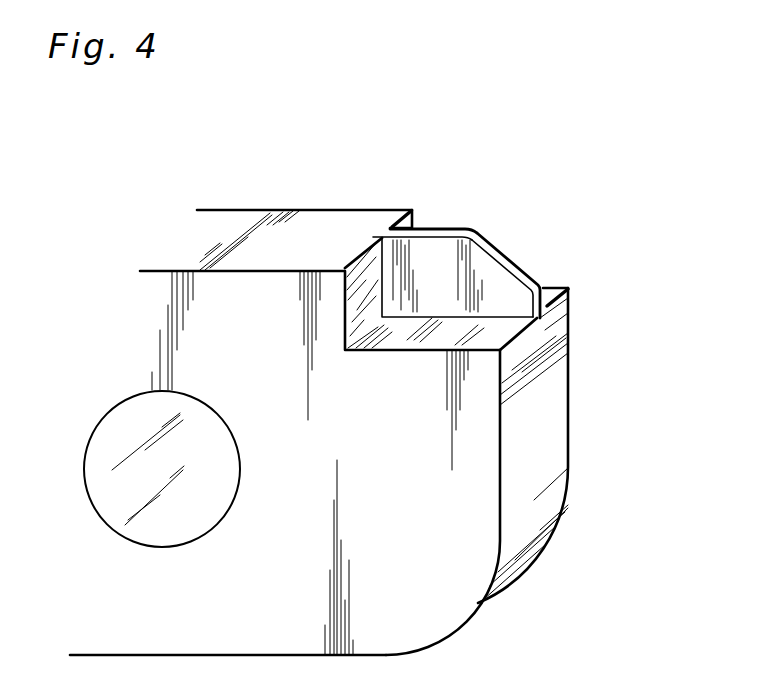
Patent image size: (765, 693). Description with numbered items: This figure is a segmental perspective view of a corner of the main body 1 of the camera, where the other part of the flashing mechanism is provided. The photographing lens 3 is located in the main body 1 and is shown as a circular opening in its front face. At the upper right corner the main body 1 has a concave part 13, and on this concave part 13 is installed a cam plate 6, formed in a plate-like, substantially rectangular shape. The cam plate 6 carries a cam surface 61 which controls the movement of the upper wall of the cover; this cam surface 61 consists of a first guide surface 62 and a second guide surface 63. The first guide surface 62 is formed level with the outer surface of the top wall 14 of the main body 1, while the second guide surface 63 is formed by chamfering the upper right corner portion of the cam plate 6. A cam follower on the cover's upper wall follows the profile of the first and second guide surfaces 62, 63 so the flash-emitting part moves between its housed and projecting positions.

The main body 1 is at (243, 210).
The top wall 14 is at (323, 217).
The photographing lens 3 is at (198, 527).
The cam plate 6 is at (440, 290).
The concave part 13 is at (472, 335).
The cam surface 61 is at (506, 189).
The first guide surface 62 is at (448, 232).
The second guide surface 63 is at (512, 255).